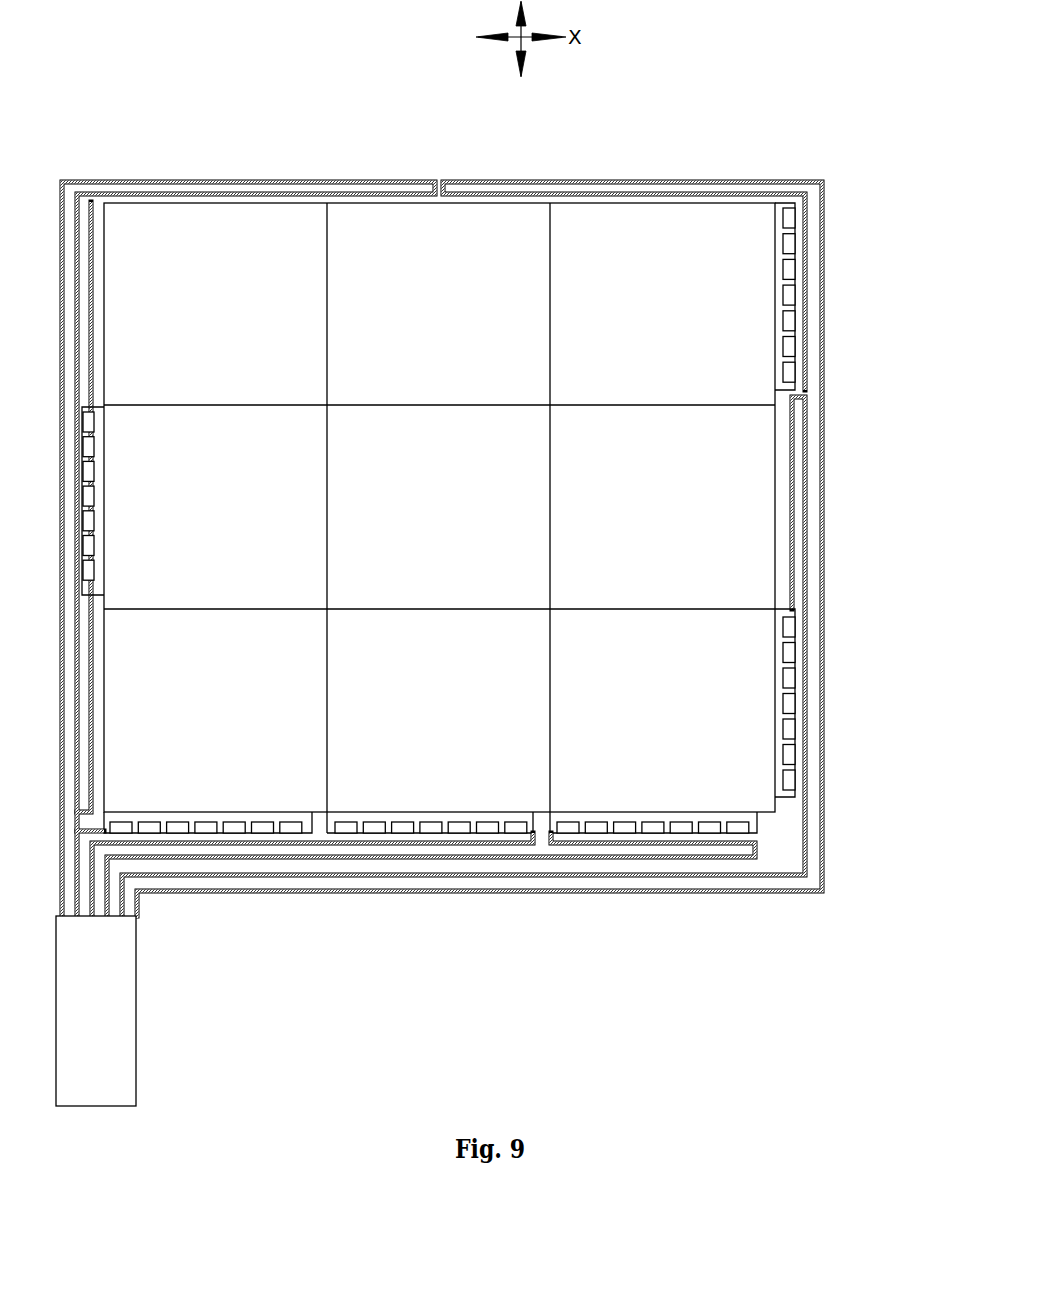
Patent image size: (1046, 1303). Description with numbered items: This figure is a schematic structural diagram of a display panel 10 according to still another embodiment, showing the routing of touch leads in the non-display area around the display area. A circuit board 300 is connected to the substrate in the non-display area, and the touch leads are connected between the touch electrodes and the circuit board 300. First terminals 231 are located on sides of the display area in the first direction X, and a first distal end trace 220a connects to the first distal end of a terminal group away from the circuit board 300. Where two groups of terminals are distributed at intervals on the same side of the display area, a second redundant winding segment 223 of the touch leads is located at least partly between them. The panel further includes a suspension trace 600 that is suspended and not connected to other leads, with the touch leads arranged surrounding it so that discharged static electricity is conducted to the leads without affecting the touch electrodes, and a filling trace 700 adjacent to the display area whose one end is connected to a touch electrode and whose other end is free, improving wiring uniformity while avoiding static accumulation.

The display panel 10 is at (369, 44).
The suspension trace 600 is at (243, 186).
The filling trace 700 is at (93, 289).
The first distal end trace 220a is at (788, 283).
The first terminals 231 is at (514, 520).
The second redundant winding segment 223 is at (793, 518).
The circuit board 300 is at (113, 981).